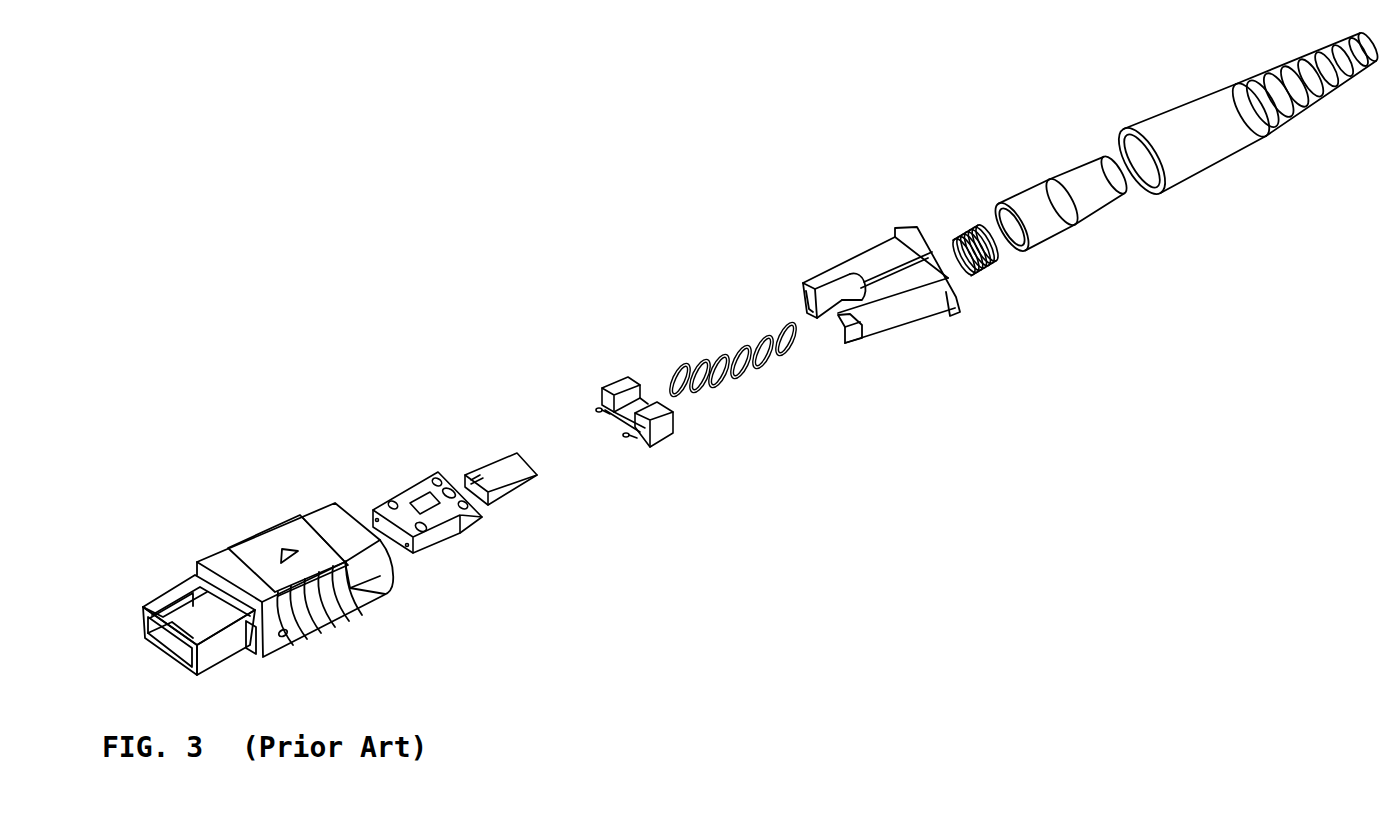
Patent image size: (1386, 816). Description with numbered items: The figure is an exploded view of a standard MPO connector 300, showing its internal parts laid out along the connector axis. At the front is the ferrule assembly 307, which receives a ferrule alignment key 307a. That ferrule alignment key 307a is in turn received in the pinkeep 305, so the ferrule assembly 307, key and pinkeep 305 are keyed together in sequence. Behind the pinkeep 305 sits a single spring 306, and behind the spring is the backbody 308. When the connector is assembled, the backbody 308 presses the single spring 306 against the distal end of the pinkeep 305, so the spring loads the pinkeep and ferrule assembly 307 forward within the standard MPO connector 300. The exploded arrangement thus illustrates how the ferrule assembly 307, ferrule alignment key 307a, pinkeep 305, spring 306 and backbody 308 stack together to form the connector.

The standard MPO connector 300 is at (141, 144).
The pinkeep 305 is at (617, 386).
The spring 306 is at (726, 344).
The ferrule assembly 307 is at (418, 514).
The ferrule alignment key 307a is at (482, 474).
The backbody 308 is at (873, 267).